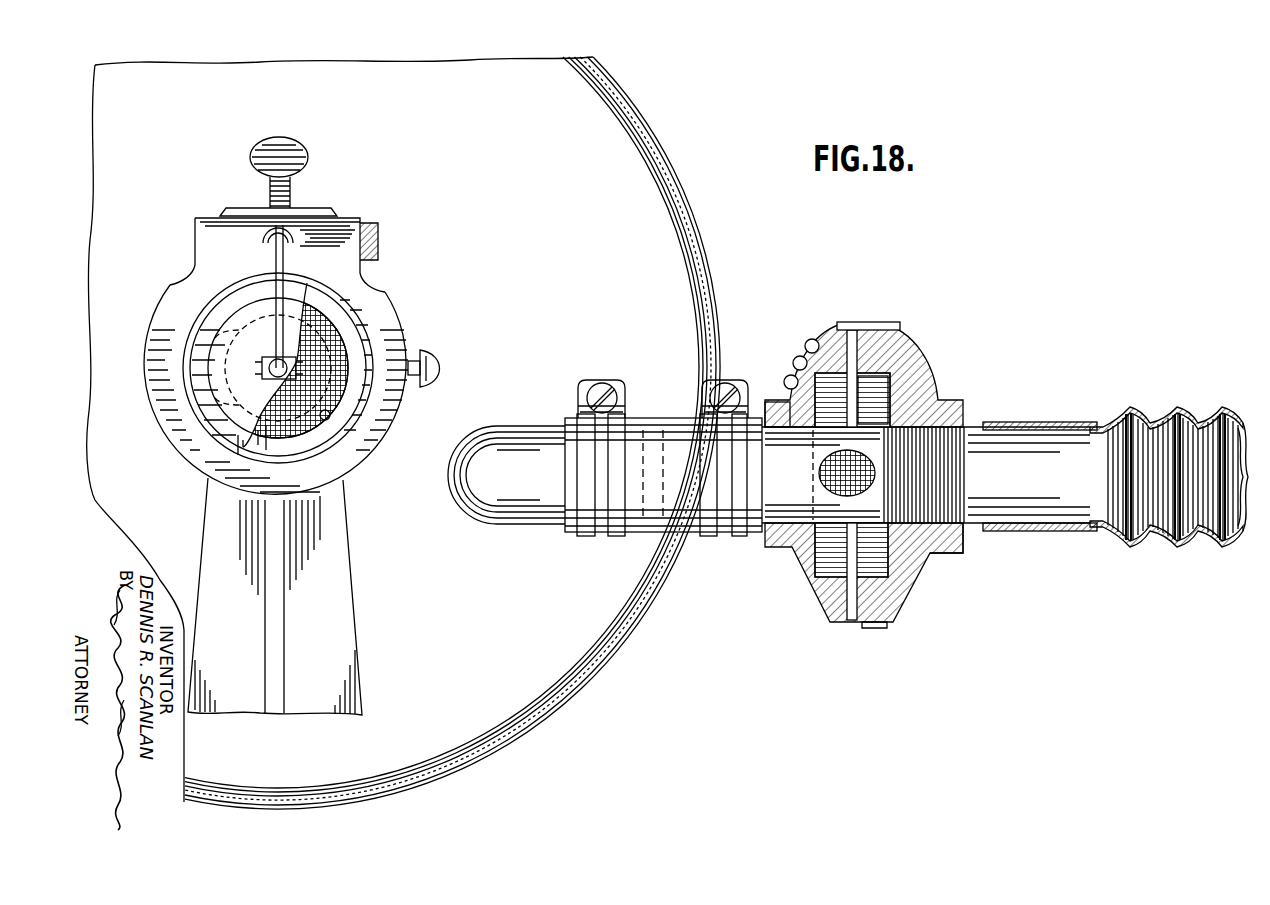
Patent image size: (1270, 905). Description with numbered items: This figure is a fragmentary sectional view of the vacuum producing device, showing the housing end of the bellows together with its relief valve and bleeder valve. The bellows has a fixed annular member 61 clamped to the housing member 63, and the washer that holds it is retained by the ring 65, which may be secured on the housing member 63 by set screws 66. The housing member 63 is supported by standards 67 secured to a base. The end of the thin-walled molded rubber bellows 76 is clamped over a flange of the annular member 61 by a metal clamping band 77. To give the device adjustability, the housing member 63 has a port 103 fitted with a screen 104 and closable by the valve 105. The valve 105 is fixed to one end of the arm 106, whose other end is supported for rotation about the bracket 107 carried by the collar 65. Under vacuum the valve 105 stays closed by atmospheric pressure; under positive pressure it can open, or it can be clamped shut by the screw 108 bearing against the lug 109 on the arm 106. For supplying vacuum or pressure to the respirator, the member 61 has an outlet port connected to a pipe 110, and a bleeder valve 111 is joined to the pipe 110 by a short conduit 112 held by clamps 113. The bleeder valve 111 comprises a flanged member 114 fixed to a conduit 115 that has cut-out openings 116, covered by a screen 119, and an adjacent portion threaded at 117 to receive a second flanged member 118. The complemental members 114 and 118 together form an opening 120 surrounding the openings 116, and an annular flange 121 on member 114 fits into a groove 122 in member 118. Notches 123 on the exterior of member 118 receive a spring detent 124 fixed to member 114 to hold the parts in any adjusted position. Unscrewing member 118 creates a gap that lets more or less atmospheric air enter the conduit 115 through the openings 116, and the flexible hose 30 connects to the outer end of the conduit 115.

The flexible hose 30 is at (1167, 405).
The fixed annular member 61 is at (645, 205).
The housing member 63 is at (358, 340).
The ring 65 is at (383, 310).
The set screws 66 is at (433, 360).
The standards 67 is at (220, 523).
The molded rubber bellows 76 is at (713, 297).
The metal clamping bands 77 is at (713, 252).
The port 103 is at (330, 413).
The screen 104 is at (315, 337).
The valve 105 is at (233, 303).
The arm 106 is at (280, 270).
The bracket 107 is at (287, 257).
The screw 108 is at (290, 152).
The lug 109 is at (267, 232).
The pipe 110 is at (500, 507).
The bleeder valve 111 is at (791, 565).
The short conduit 112 is at (652, 530).
The clamps 113 is at (703, 407).
The flanged member 114 is at (832, 360).
The conduit 115 is at (775, 440).
The openings 116 is at (838, 428).
The threaded portion 117 is at (943, 518).
The second flanged member 118 is at (915, 387).
The screen 119 is at (851, 462).
The opening 120 is at (870, 390).
The annular flange 121 is at (832, 358).
The groove 122 is at (860, 358).
The notches 123 is at (873, 323).
The spring detent 124 is at (883, 323).